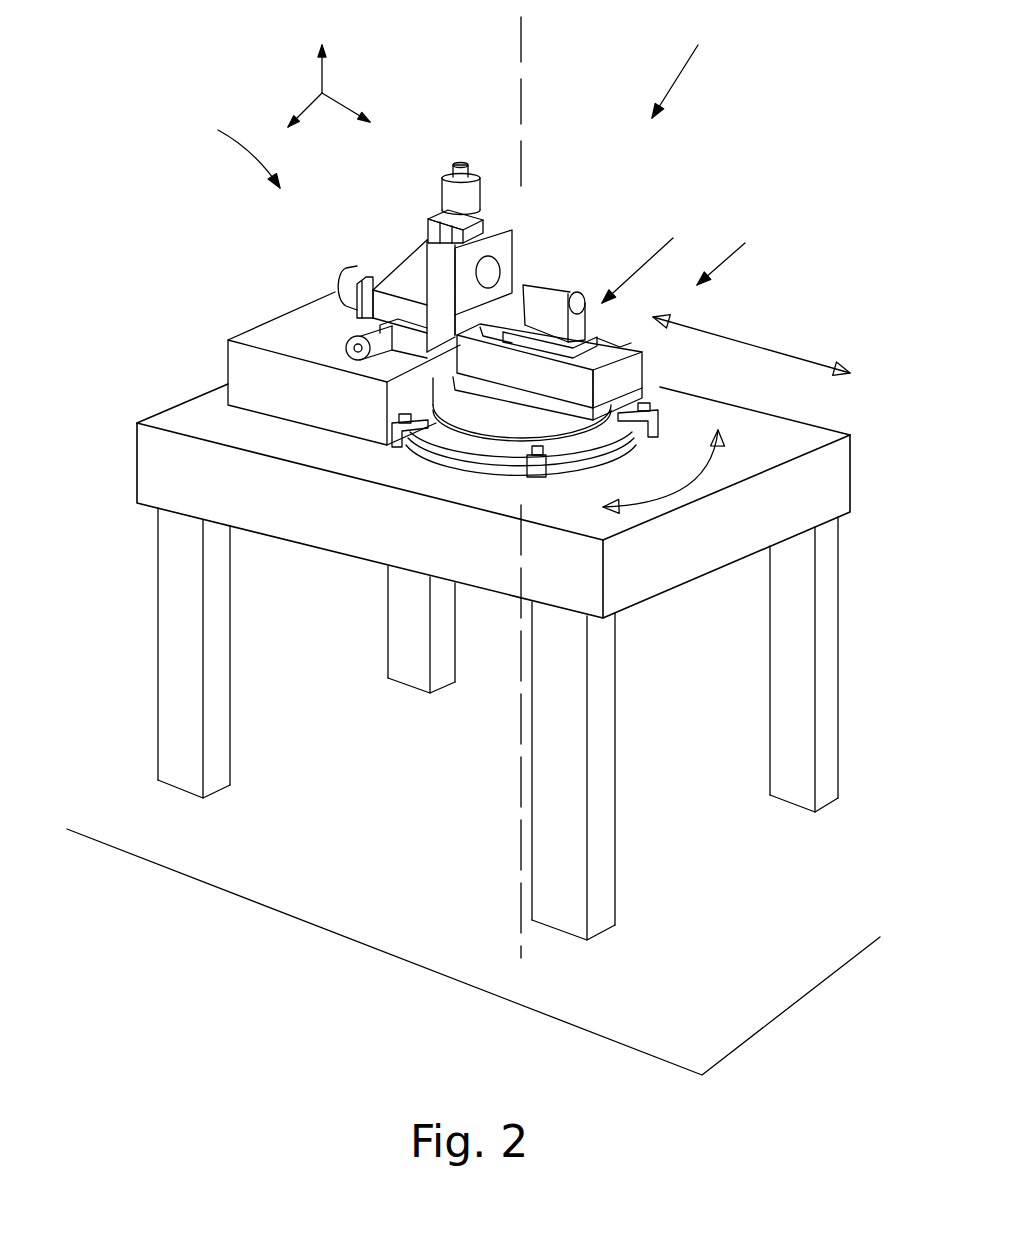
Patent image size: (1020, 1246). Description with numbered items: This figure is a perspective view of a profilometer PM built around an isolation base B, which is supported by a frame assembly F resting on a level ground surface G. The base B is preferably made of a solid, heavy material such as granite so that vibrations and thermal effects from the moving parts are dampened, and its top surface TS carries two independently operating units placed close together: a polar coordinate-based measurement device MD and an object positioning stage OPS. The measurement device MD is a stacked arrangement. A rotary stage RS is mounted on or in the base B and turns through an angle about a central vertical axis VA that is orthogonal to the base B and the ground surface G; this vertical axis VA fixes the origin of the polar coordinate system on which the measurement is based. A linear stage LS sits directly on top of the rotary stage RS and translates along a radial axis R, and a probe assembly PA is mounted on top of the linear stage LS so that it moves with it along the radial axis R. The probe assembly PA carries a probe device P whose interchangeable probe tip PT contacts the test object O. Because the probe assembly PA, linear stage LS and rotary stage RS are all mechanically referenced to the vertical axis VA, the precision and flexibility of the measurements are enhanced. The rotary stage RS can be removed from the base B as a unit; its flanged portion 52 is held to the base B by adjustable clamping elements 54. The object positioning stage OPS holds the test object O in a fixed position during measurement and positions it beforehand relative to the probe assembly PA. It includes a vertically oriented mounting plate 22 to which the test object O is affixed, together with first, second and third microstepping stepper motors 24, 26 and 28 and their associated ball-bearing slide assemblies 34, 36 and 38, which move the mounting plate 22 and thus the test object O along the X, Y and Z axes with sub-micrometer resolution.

The mounting plate 22 is at (514, 227).
The first microstepping stepper motor 24 is at (350, 350).
The second microstepping stepper motor 26 is at (443, 193).
The third microstepping stepper motor 28 is at (357, 276).
The ball-bearing slide assembly 34 is at (395, 372).
The ball-bearing slide assembly 36 is at (437, 232).
The ball-bearing slide assembly 38 is at (344, 304).
The flanged portion 52 is at (555, 425).
The adjustable clamping elements 54 is at (523, 472).
The vertical axis VA is at (516, 30).
The profilometer PM is at (690, 67).
The object positioning stage OPS is at (223, 146).
The X axis X is at (299, 107).
The Y axis Y is at (334, 62).
The Z axis Z is at (351, 100).
The probe tip PT is at (518, 287).
The test object O is at (498, 266).
The probe device P is at (577, 280).
The probe assembly PA is at (653, 257).
The measurement device MD is at (737, 249).
The radial axis R is at (731, 338).
The top surface TS is at (167, 413).
The linear stage LS is at (645, 373).
The isolation base B is at (137, 458).
The rotary stage RS is at (552, 422).
The frame assembly F is at (158, 670).
The ground surface G is at (335, 886).